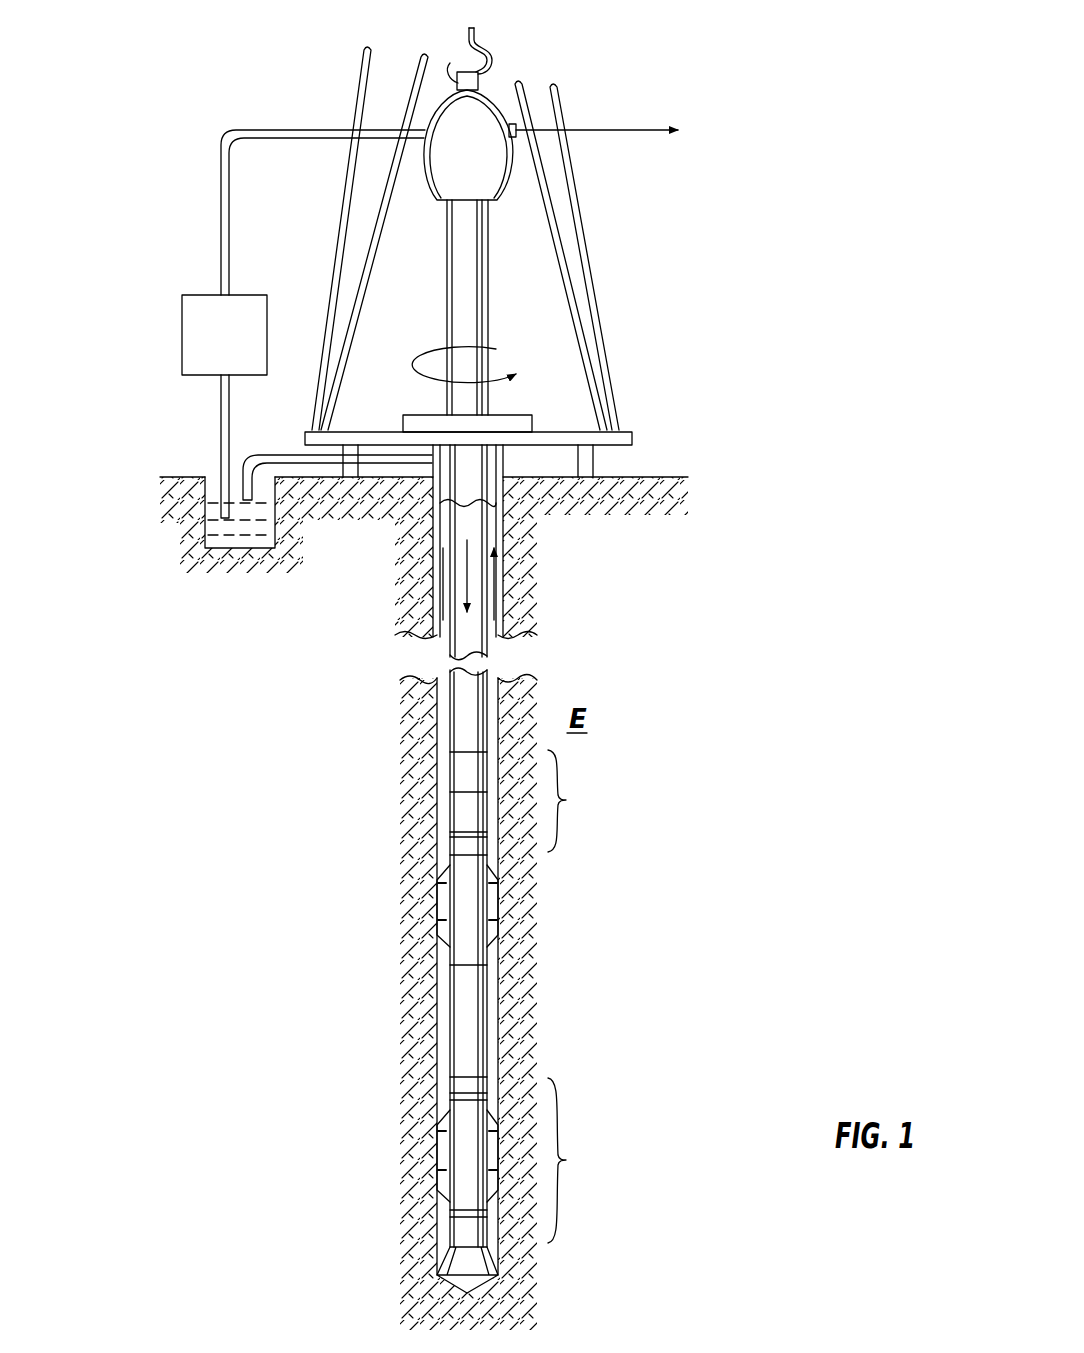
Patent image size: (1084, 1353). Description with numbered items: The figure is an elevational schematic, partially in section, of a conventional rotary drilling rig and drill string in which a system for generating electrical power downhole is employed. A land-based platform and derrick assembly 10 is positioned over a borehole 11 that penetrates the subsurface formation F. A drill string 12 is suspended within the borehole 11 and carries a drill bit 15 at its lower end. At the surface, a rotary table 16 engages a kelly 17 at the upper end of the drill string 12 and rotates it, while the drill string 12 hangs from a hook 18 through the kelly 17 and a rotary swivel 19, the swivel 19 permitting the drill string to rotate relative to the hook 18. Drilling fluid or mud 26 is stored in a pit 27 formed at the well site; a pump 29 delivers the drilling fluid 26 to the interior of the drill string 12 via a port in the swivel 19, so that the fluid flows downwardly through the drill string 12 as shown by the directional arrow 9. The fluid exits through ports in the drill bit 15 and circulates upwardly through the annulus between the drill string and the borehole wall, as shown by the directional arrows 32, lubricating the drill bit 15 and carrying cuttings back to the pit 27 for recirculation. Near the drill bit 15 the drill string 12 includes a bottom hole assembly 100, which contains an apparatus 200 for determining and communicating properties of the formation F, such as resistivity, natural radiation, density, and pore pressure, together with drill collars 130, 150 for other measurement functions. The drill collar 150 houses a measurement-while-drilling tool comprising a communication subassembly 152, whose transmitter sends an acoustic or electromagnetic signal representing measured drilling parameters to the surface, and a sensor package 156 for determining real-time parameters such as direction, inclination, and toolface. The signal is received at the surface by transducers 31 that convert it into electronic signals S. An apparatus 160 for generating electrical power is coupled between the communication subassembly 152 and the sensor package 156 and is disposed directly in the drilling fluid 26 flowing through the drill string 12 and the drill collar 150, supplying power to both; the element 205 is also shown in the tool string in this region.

The directional arrow 9 is at (465, 567).
The platform and derrick assembly 10 is at (674, 452).
The borehole 11 is at (495, 632).
The drill string 12 is at (455, 705).
The drill bit 15 is at (455, 1260).
The rotary table 16 is at (510, 422).
The kelly 17 is at (474, 230).
The hook 18 is at (470, 32).
The rotary swivel 19 is at (450, 186).
The drilling fluid 26 is at (243, 542).
The pit 27 is at (205, 525).
The pump 29 is at (198, 375).
The transducers 31 is at (518, 140).
The directional arrows 32 is at (497, 584).
The bottom hole assembly 100 is at (747, 735).
The drill collar 130 is at (460, 1005).
The drill collar (MWD tool) 150 is at (566, 800).
The communication subassembly 152 is at (460, 760).
The sensor package 156 is at (460, 845).
The apparatus for generating electrical power 160 is at (460, 800).
The apparatus for determining and communicating formation properties 200 is at (566, 1160).
The sensor connection 205 is at (461, 830).